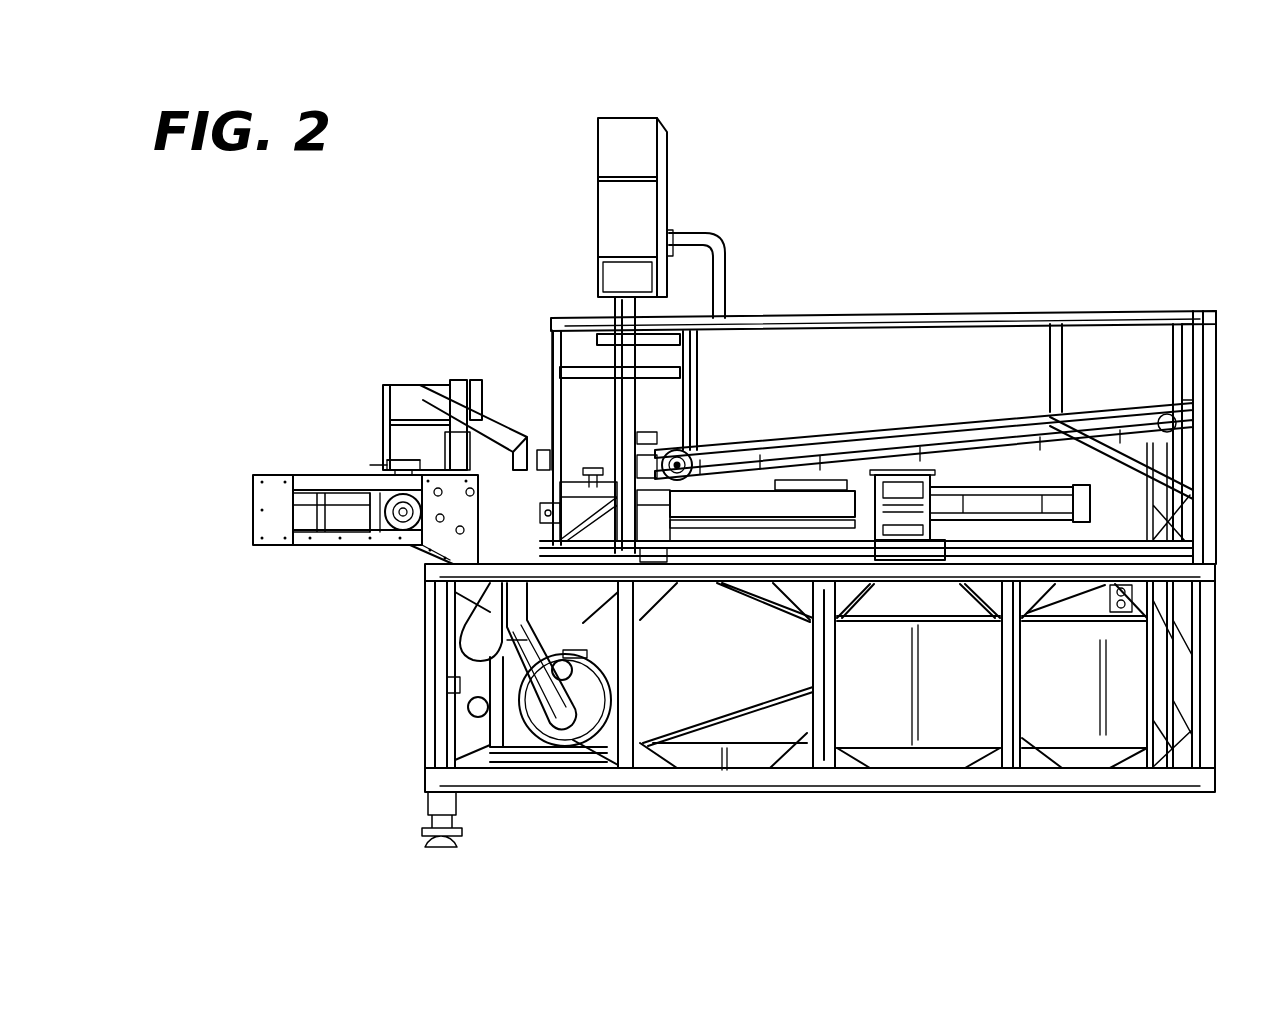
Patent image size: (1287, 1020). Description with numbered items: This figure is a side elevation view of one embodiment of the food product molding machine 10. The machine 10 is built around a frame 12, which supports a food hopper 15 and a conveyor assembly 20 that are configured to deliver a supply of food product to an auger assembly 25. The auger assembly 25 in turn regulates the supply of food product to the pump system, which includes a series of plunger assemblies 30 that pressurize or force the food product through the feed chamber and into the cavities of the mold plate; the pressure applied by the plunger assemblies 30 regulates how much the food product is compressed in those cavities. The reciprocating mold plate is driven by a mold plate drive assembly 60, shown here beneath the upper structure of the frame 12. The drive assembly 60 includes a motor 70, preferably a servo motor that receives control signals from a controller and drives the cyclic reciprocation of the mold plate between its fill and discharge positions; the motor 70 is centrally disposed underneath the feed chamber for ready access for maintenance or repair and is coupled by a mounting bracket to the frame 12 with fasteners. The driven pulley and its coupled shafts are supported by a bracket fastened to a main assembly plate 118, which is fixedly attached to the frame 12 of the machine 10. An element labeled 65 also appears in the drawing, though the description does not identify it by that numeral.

The food product molding machine 10 is at (1085, 152).
The frame 12 is at (1210, 661).
The food hopper 15 is at (1001, 316).
The conveyor assembly 20 is at (818, 438).
The auger assembly 25 is at (554, 313).
The plunger assemblies 30 is at (757, 506).
The mold plate drive assembly 60 is at (366, 558).
The hopper 65 is at (399, 412).
The motor 70 is at (541, 735).
The main assembly plate 118 is at (503, 558).